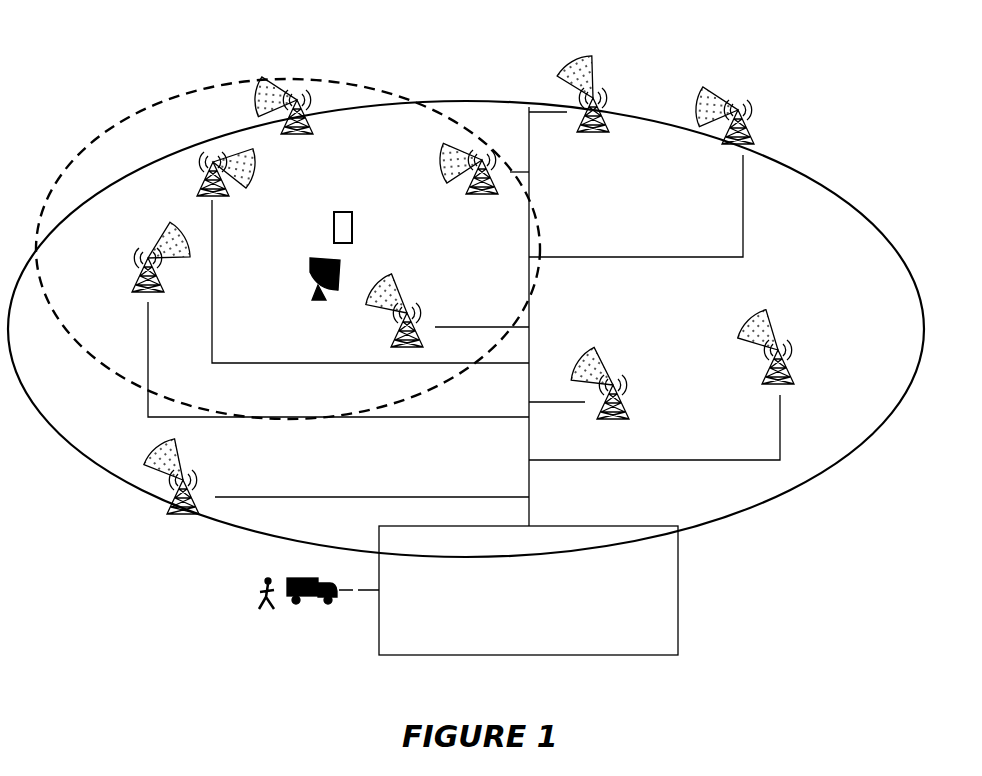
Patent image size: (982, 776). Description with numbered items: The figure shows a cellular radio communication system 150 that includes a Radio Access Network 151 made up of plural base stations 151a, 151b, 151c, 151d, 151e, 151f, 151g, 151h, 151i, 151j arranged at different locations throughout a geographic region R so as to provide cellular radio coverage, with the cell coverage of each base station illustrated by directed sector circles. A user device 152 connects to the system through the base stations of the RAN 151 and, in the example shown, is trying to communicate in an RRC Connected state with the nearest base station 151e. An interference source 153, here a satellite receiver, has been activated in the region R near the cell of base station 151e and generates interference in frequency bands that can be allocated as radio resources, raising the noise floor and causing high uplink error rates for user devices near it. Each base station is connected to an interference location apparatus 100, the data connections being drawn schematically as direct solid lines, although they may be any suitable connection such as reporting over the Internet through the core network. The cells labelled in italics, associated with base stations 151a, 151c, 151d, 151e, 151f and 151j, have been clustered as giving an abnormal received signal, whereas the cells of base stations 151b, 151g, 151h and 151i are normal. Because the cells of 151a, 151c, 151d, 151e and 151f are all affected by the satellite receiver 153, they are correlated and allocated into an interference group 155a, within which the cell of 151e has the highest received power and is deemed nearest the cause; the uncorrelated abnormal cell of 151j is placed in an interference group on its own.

The interference location apparatus 100 is at (528, 381).
The cellular radio communication system 150 is at (144, 640).
The Radio Access Network 151 is at (372, 70).
The base station 151a is at (131, 289).
The base station 151b is at (176, 512).
The base station 151c is at (197, 190).
The base station 151d is at (297, 133).
The base station 151e is at (398, 326).
The base station 151f is at (470, 193).
The base station 151g is at (585, 135).
The base station 151h is at (625, 416).
The base station 151i is at (672, 171).
The base station 151j is at (792, 380).
The user device 152 is at (353, 220).
The interference source 153 is at (307, 297).
The interference group 155a is at (138, 110).
The geographic region R is at (110, 473).